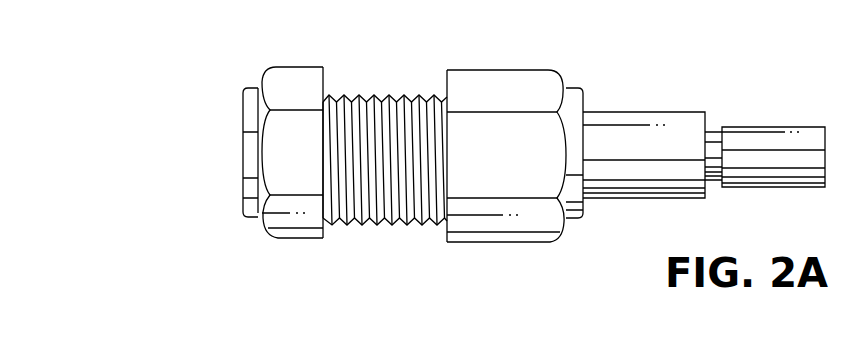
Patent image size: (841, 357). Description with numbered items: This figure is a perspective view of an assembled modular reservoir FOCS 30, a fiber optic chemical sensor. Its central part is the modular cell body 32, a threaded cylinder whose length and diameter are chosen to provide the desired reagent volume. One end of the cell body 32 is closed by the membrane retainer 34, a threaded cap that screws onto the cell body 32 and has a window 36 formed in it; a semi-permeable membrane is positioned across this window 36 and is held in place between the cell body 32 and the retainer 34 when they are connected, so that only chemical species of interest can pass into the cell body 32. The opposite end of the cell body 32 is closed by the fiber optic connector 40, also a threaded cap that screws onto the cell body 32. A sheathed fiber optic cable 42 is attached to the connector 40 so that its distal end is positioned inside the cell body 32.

The reservoir FOCS 30 is at (668, 66).
The modular cell body 32 is at (382, 92).
The membrane retainer 34 is at (292, 242).
The window 36 is at (233, 167).
The fiber optic connector 40 is at (540, 70).
The sheathed fiber optic cable 42 is at (803, 126).